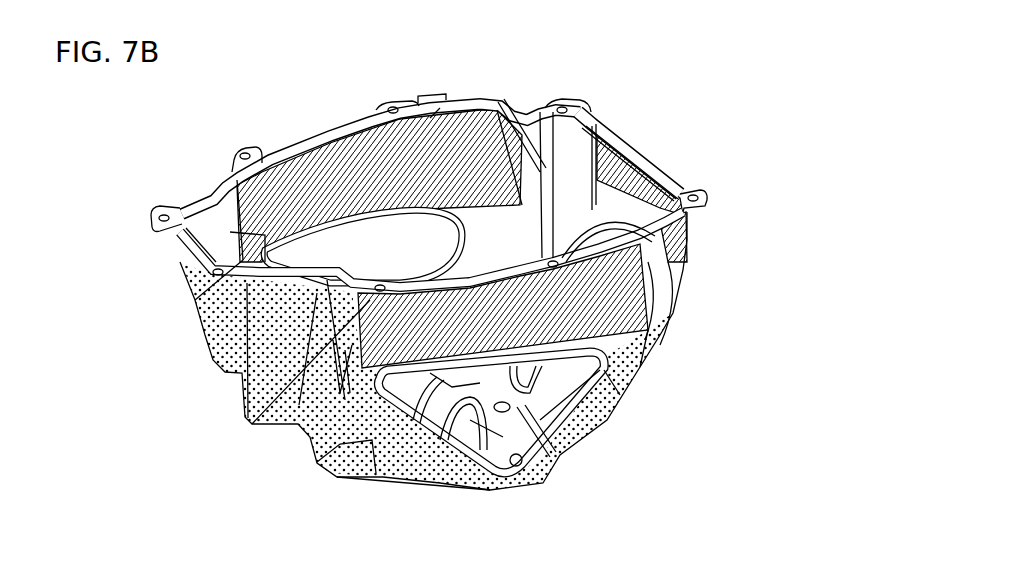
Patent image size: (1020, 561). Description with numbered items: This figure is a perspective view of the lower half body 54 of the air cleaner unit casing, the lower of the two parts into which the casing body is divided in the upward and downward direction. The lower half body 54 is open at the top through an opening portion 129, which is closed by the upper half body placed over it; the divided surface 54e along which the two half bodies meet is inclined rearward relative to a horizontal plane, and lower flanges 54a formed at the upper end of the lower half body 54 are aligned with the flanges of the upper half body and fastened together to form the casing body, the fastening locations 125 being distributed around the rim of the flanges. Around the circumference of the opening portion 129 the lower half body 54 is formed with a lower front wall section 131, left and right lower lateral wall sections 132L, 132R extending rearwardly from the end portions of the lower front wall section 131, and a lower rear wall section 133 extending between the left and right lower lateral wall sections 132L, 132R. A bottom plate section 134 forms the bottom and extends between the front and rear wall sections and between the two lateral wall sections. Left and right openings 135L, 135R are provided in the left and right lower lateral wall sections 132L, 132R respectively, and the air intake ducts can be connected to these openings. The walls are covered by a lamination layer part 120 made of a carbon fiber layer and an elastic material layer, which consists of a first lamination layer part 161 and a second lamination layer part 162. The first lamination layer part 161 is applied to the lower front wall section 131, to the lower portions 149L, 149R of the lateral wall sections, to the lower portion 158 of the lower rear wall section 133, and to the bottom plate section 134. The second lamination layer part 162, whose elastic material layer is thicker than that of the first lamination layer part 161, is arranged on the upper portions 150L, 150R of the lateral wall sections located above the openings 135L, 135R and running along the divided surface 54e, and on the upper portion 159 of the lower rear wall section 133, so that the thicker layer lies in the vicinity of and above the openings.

The lower half body 54 is at (705, 123).
The lower flange 54a is at (686, 186).
The divided surface 54e is at (556, 100).
The lamination layer part 120 is at (663, 451).
The bolt holes 125 is at (385, 105).
The opening portion 129 is at (548, 200).
The lower front wall section 131 is at (217, 330).
The right lower lateral wall section 132R is at (500, 48).
The left lower lateral wall section 132L is at (760, 325).
The lower rear wall section 133 is at (760, 232).
The bottom plate section 134 is at (390, 481).
The right opening 135R is at (440, 236).
The left opening 135L is at (520, 471).
The lower portion of right lower lateral wall section 149R is at (497, 220).
The upper portion of right lower lateral wall section 150R is at (447, 145).
The lower portion of left lower lateral wall section 149L is at (650, 352).
The upper portion of left lower lateral wall section 150L is at (658, 322).
The lower portion of lower rear wall section 158 is at (688, 272).
The upper portion of lower rear wall section 159 is at (688, 232).
The first lamination layer part 161 is at (622, 396).
The second lamination layer part 162 is at (556, 420).